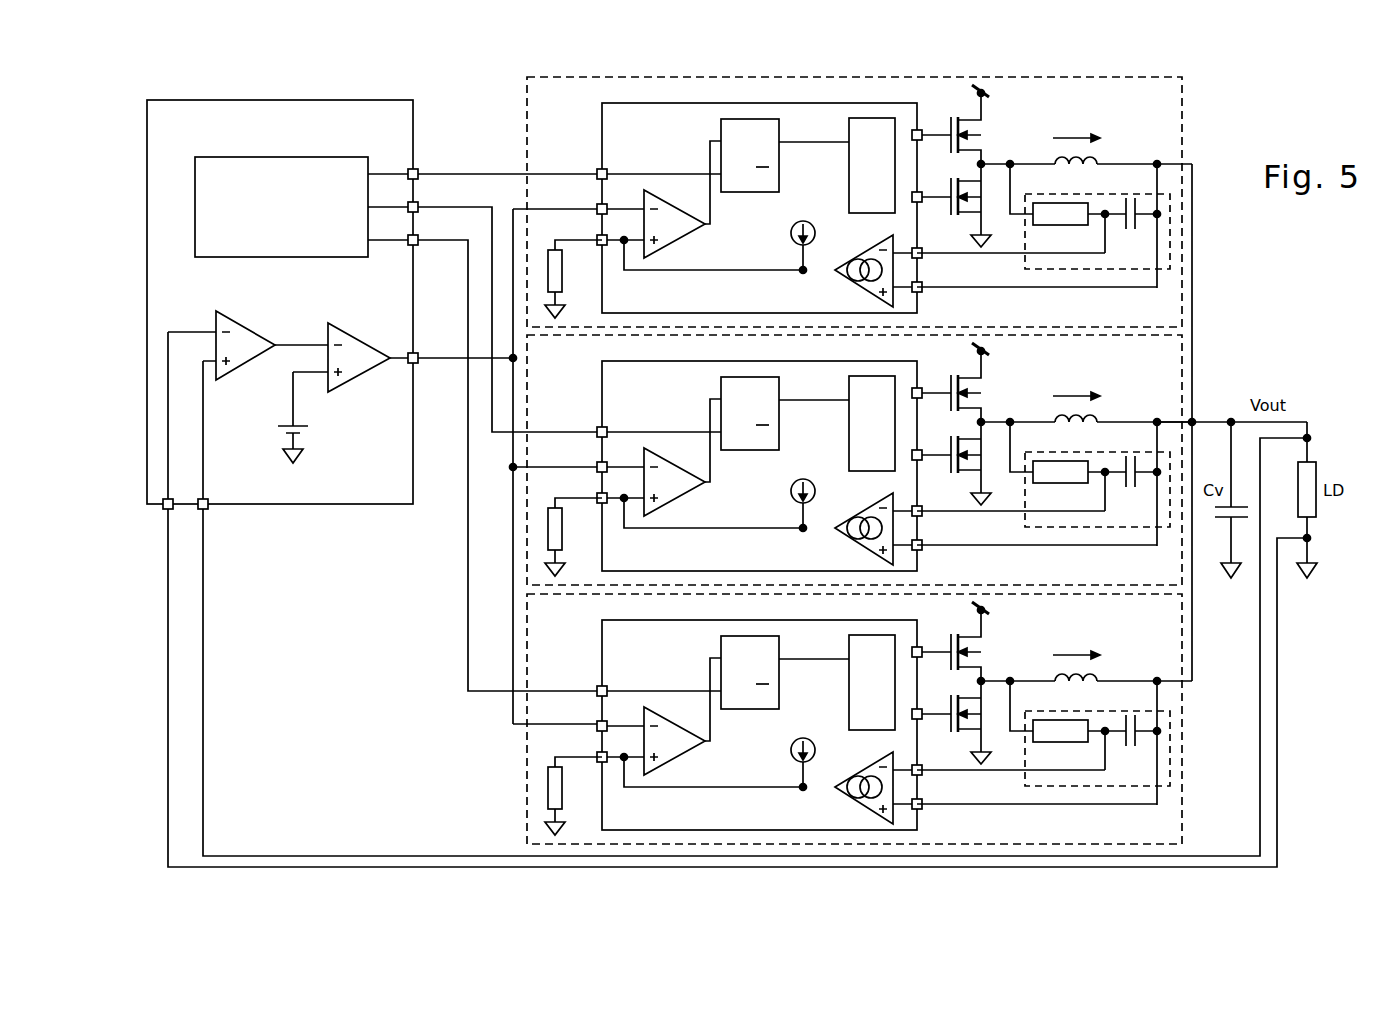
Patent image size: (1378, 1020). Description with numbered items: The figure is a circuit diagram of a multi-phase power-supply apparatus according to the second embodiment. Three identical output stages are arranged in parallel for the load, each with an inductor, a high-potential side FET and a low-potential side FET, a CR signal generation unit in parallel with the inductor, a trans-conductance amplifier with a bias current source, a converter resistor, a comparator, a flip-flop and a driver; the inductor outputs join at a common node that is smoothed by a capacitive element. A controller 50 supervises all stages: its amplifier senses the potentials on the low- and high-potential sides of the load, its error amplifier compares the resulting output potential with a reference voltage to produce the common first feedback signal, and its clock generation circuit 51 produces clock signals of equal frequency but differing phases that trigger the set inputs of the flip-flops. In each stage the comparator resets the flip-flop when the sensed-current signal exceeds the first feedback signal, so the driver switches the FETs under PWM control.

The controller 50 is at (357, 100).
The clock generation circuit 51 is at (333, 157).